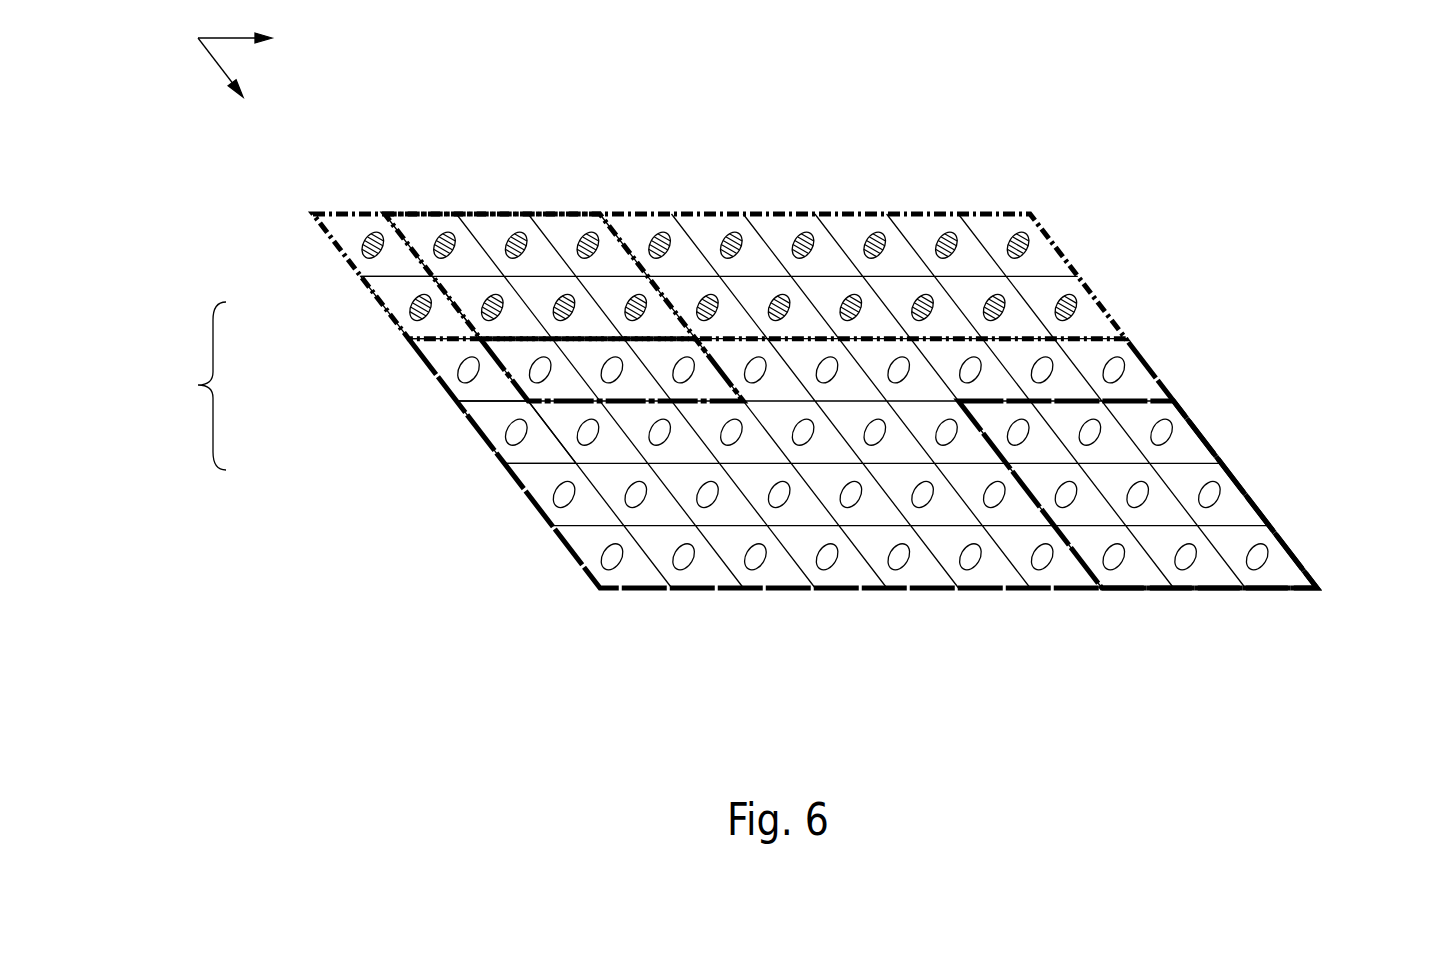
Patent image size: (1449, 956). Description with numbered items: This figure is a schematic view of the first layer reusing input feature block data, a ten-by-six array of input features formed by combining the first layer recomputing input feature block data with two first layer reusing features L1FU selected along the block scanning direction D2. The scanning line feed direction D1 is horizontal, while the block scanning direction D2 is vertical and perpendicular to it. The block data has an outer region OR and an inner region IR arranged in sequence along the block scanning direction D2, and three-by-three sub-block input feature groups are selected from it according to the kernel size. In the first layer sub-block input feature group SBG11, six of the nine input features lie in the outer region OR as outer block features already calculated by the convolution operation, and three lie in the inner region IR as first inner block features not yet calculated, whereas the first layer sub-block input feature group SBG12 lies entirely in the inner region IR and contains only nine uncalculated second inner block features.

The scanning line feed direction D1 is at (261, 40).
The block scanning direction D2 is at (233, 88).
The first layer sub-block input feature group SBG11 is at (485, 213).
The first layer sub-block input feature group SBG12 is at (1203, 590).
The outer region OR is at (1050, 214).
The inner region IR is at (1337, 339).
The first layer reusing features L1FU is at (359, 295).